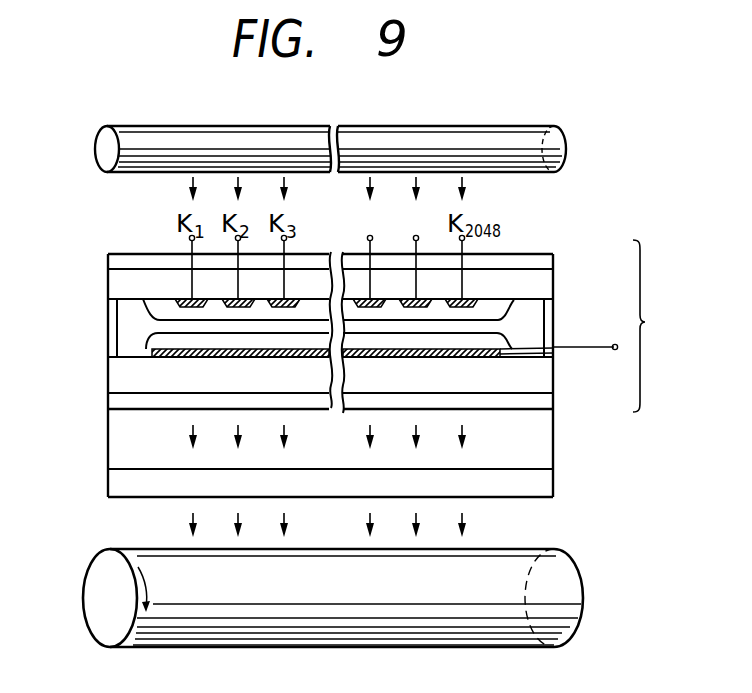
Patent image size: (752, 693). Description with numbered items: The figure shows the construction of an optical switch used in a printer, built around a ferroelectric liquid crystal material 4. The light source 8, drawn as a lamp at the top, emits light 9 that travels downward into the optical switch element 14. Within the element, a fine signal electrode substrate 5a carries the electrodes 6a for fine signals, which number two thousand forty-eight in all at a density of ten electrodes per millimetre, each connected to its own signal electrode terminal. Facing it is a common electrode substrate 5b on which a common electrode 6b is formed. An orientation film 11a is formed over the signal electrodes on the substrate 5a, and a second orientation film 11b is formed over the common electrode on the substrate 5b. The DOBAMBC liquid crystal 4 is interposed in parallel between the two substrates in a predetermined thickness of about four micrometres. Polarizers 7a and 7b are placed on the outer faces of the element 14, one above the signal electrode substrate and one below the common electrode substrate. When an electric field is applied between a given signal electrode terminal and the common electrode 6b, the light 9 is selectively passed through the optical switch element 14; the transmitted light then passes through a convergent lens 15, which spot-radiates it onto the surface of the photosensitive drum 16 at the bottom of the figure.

The ferroelectric liquid crystal material 4 is at (130, 341).
The fine signal electrode substrate 5a is at (553, 280).
The common electrode substrate 5b is at (553, 398).
The electrodes for fine signals 6a is at (478, 304).
The common electrode 6b is at (183, 357).
The polarizer 7a is at (553, 260).
The polarizer 7b is at (553, 412).
The light source 8 is at (563, 131).
The light 9 is at (327, 189).
The orientation film 11a is at (150, 312).
The orientation film 11b is at (520, 350).
The optical switch element 14 is at (656, 326).
The convergent lens 15 is at (553, 481).
The photosensitive drum 16 is at (580, 575).